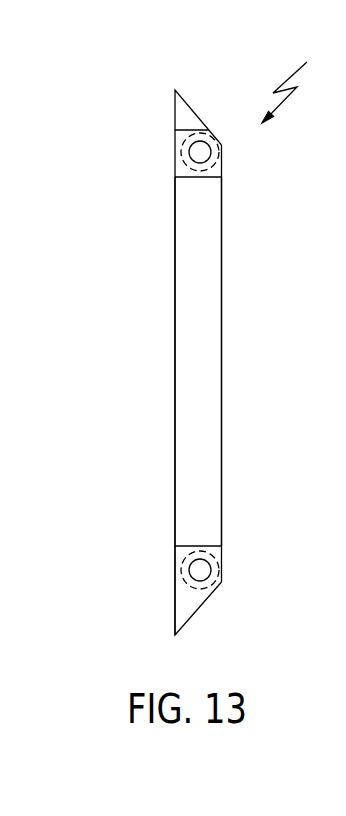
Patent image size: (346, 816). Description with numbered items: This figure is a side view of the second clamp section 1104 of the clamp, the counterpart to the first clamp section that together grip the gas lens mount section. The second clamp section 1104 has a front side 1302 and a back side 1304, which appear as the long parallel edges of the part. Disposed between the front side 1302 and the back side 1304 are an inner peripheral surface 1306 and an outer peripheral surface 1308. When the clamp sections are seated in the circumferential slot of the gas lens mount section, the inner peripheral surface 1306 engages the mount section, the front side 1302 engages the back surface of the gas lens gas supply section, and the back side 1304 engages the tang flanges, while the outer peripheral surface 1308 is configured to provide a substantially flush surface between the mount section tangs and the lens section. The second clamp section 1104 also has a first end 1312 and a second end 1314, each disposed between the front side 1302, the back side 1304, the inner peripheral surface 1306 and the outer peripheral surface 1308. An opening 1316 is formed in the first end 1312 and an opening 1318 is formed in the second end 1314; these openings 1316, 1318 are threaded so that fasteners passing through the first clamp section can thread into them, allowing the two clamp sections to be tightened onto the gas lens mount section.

The second clamp section 1104 is at (301, 78).
The front side 1302 is at (174, 393).
The back side 1304 is at (223, 393).
The inner peripheral surface 1306 is at (182, 253).
The outer peripheral surface 1308 is at (192, 111).
The first end 1312 is at (176, 171).
The second end 1314 is at (181, 603).
The opening 1316 is at (198, 152).
The opening 1318 is at (193, 569).